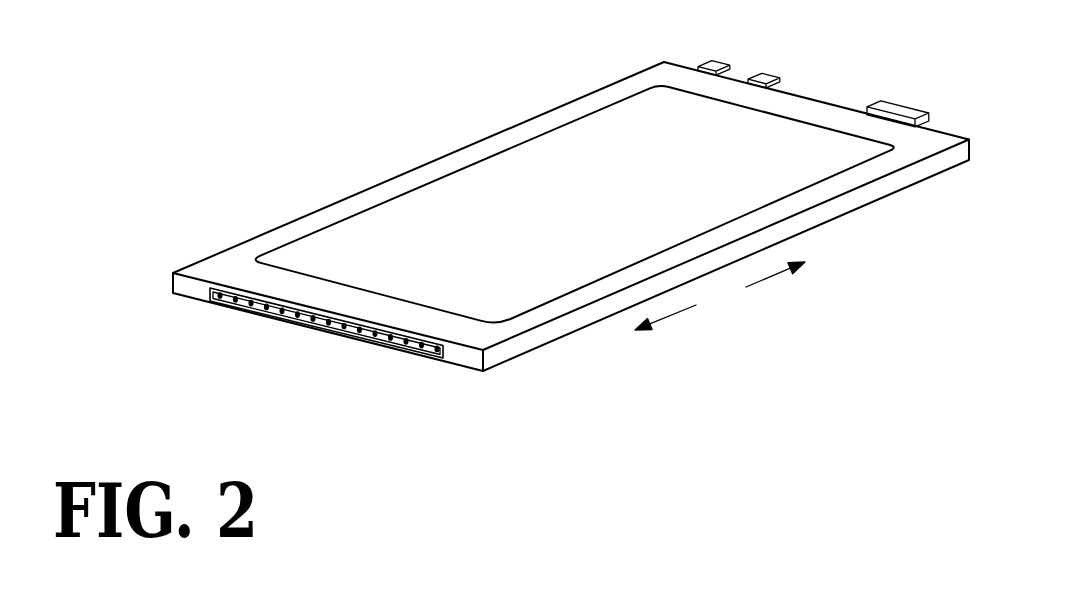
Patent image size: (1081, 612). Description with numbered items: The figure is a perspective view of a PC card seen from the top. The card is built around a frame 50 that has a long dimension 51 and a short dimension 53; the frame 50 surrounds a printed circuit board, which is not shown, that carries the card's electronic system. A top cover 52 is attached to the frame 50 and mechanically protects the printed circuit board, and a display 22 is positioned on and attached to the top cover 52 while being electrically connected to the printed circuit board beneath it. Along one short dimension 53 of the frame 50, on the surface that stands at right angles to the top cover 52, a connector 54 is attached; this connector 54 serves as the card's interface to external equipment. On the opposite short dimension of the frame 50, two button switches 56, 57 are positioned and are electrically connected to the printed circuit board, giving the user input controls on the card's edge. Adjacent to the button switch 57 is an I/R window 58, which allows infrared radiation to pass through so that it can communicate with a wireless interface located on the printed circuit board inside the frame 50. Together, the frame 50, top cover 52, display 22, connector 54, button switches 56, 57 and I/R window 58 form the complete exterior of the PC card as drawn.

The display 22 is at (615, 122).
The frame 50 is at (942, 165).
The long dimension 51 is at (720, 296).
The top cover 52 is at (662, 72).
The short dimension 53 is at (443, 357).
The connector 54 is at (430, 347).
The button switch 56 is at (717, 63).
The button switch 57 is at (776, 74).
The I/R window 58 is at (907, 107).